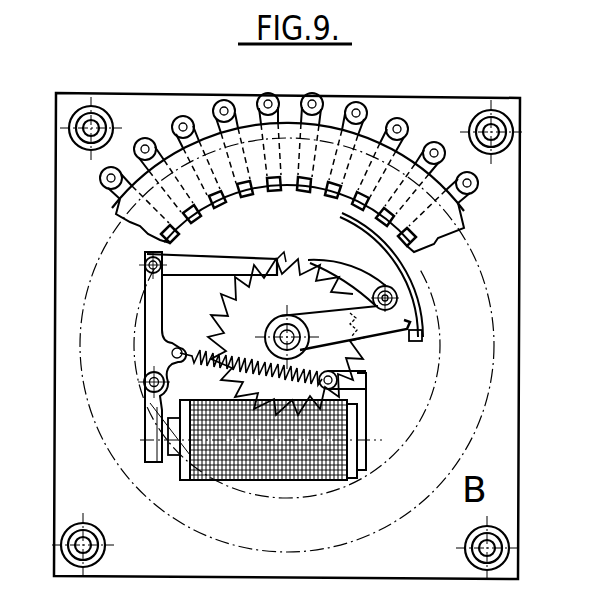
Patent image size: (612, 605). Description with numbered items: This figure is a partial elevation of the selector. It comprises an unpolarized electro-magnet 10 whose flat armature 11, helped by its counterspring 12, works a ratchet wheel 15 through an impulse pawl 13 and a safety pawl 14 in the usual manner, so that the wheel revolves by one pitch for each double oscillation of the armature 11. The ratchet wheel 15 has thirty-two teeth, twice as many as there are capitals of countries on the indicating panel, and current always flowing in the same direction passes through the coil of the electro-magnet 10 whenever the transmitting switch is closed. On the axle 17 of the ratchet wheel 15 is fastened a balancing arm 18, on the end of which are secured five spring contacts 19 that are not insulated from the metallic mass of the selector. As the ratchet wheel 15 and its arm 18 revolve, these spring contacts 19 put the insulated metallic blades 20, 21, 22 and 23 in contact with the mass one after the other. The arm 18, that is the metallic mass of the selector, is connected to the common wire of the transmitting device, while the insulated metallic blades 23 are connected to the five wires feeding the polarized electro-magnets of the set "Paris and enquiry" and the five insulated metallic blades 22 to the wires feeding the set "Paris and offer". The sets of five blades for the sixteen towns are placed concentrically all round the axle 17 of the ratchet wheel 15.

The electro-magnet 10 is at (259, 470).
The flat armature 11 is at (157, 452).
The counterspring 12 is at (203, 346).
The impulse pawl 13 is at (228, 262).
The safety pawl 14 is at (336, 266).
The ratchet wheel 15 is at (285, 258).
The axle 17 is at (278, 326).
The balancing arm 18 is at (370, 324).
The spring contacts 19 is at (400, 258).
The insulated metallic blade 20 is at (433, 144).
The insulated metallic blade 21 is at (397, 115).
The insulated metallic blades 22 is at (365, 100).
The insulated metallic blades 23 is at (313, 92).